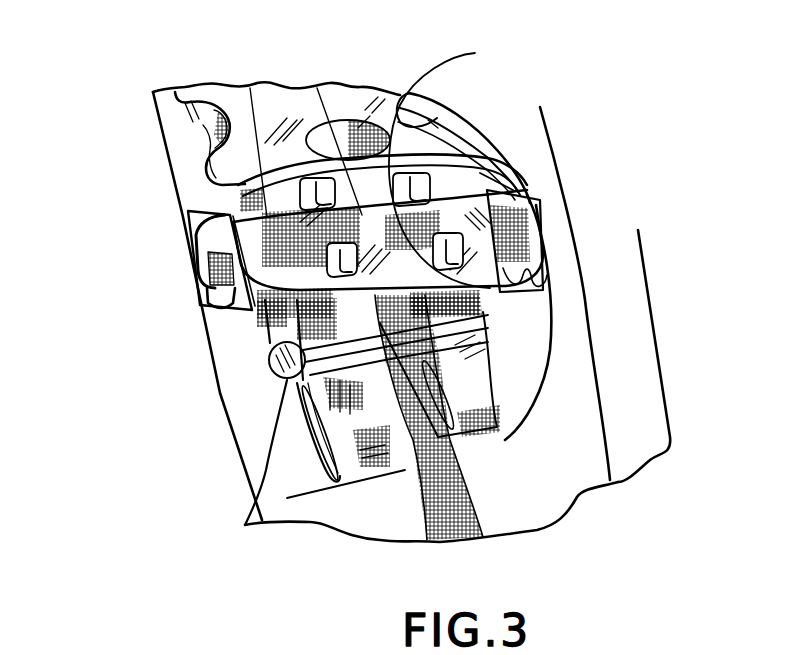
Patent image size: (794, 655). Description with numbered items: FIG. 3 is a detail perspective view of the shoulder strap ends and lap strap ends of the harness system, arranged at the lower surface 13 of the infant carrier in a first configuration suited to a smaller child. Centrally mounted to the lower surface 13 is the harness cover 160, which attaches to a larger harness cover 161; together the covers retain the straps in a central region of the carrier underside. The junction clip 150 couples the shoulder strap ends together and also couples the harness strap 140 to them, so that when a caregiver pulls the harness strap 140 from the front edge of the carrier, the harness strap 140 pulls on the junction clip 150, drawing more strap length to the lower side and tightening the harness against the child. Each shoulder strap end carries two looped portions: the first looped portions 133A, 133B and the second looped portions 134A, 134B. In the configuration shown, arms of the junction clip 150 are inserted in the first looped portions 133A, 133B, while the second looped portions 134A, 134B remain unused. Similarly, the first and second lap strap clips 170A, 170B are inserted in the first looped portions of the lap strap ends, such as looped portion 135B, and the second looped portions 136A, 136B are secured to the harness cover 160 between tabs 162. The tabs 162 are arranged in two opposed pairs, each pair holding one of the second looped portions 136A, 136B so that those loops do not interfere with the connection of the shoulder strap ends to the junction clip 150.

The lower surface 13 is at (537, 481).
The harness strap 140 is at (428, 539).
The junction clip 150 is at (278, 367).
The harness cover 160 is at (313, 283).
The larger harness cover 161 is at (290, 100).
The tabs 162 is at (397, 160).
The first looped portion of first shoulder strap end 133A is at (487, 310).
The first looped portion of second shoulder strap end 133B is at (300, 440).
The second looped portion of first shoulder strap end 134A is at (485, 362).
The second looped portion of second shoulder strap end 134B is at (255, 524).
The first looped portion of second lap strap end 135B is at (207, 256).
The second looped portion of first lap strap end 136A is at (528, 205).
The second looped portion of second lap strap end 136B is at (233, 222).
The first lap strap clip 170A is at (540, 284).
The second lap strap clip 170B is at (203, 309).